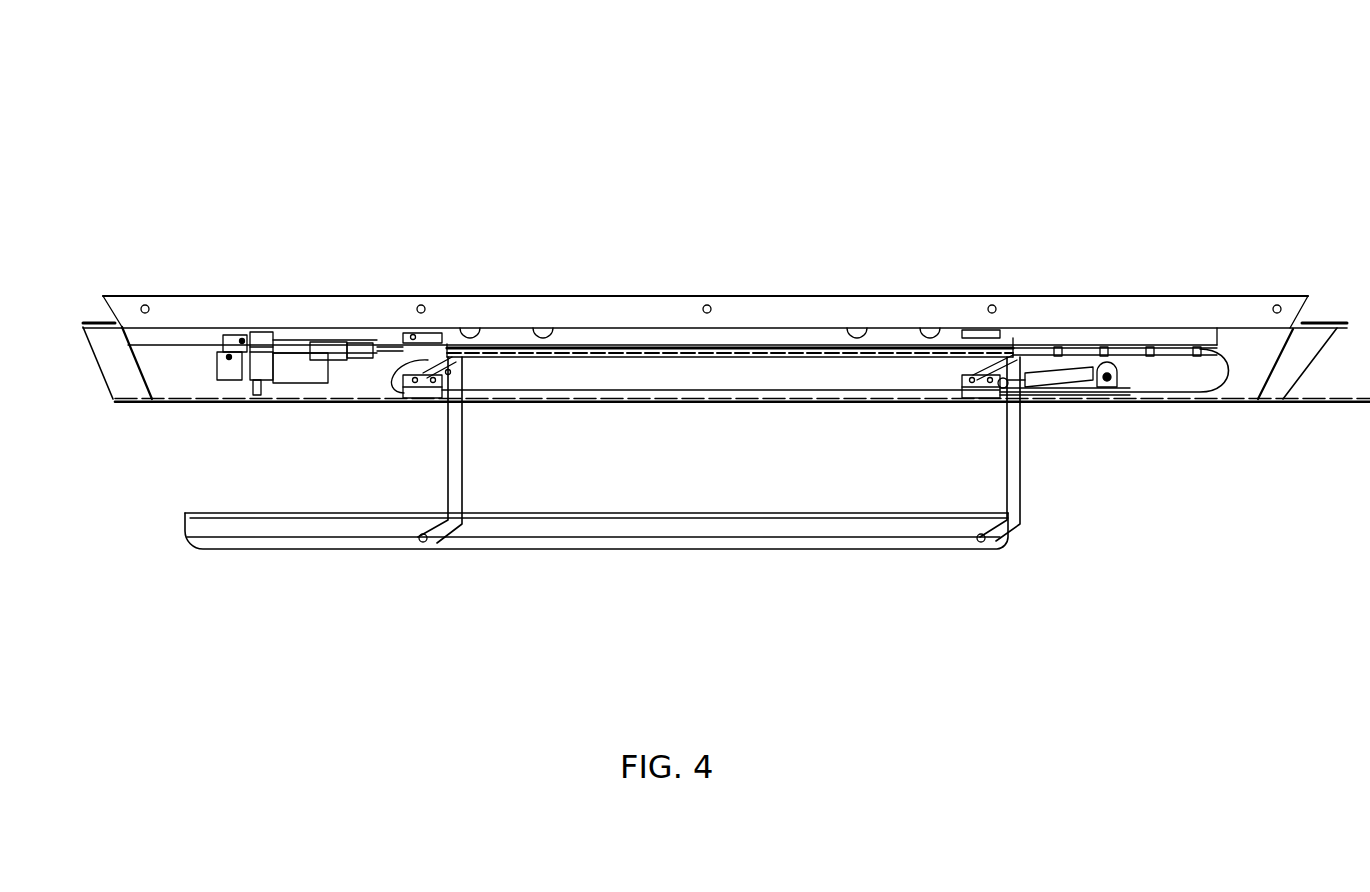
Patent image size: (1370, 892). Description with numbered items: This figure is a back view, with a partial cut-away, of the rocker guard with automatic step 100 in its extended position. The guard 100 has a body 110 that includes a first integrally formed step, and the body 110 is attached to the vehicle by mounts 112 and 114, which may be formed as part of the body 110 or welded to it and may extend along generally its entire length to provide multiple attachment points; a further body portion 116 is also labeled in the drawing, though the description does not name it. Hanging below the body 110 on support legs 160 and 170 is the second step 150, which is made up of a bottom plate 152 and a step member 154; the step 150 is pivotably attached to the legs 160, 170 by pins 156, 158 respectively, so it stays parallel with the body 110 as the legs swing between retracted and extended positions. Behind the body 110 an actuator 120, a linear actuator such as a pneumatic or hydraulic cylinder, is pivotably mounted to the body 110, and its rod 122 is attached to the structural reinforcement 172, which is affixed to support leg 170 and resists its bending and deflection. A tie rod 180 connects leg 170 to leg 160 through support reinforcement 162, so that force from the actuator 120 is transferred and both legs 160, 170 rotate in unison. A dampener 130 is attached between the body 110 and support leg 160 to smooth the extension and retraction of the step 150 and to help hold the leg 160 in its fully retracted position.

The rocker guard with automatic step 100 is at (927, 160).
The body 110 is at (1323, 322).
The mount 112 is at (193, 404).
The mount 114 is at (373, 294).
The lower panel 116 is at (570, 333).
The actuator 120 is at (262, 330).
The rod 122 is at (390, 343).
The dampener 130 is at (1055, 377).
The second step 150 is at (203, 627).
The bottom plate 152 is at (393, 550).
The step member 154 is at (310, 512).
The pin 156 is at (980, 548).
The pin 158 is at (424, 548).
The support leg 160 is at (1022, 493).
The support reinforcement 162 is at (1003, 406).
The support leg 170 is at (463, 466).
The structural reinforcement 172 is at (447, 404).
The tie rod 180 is at (667, 340).